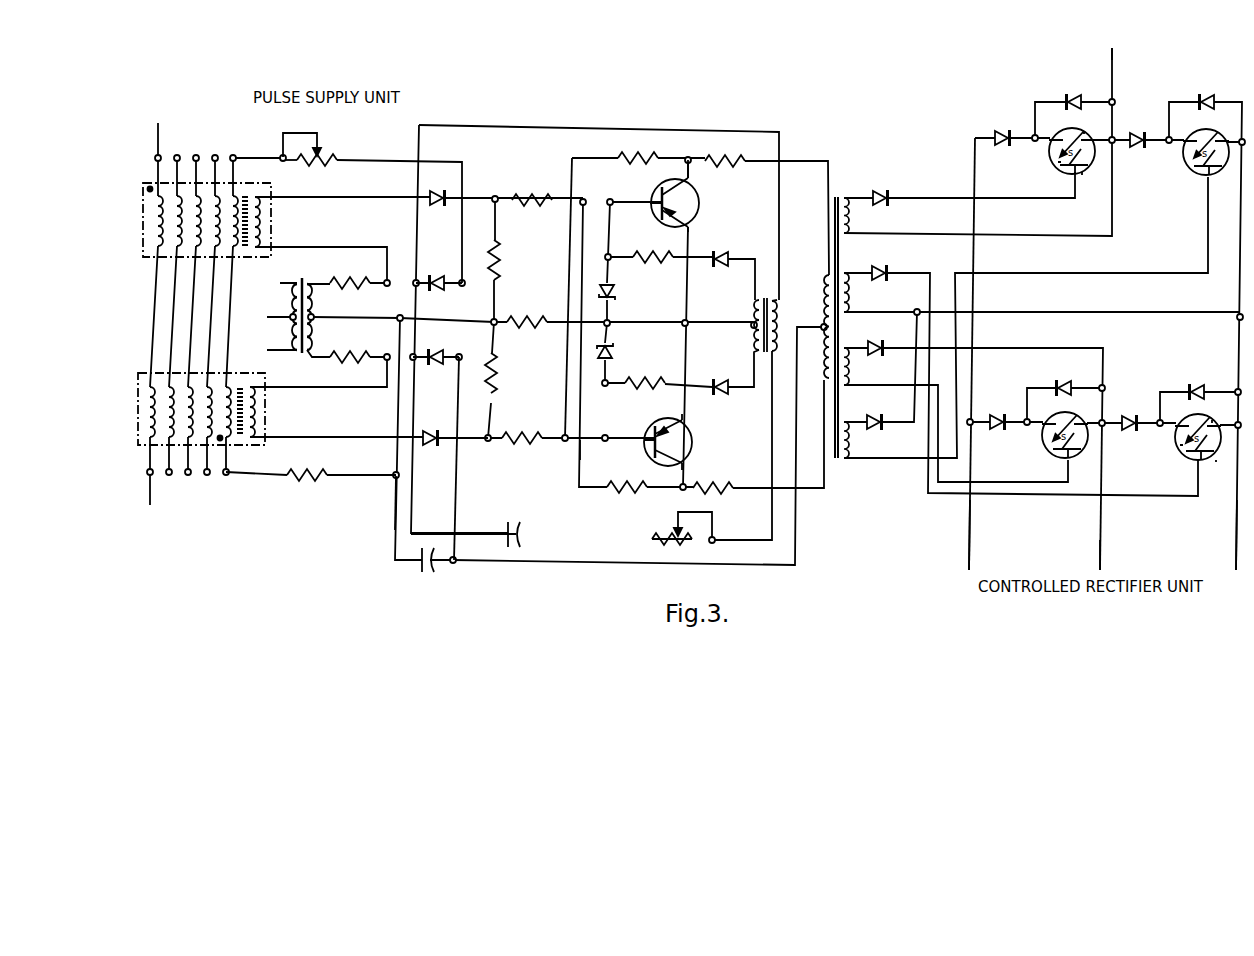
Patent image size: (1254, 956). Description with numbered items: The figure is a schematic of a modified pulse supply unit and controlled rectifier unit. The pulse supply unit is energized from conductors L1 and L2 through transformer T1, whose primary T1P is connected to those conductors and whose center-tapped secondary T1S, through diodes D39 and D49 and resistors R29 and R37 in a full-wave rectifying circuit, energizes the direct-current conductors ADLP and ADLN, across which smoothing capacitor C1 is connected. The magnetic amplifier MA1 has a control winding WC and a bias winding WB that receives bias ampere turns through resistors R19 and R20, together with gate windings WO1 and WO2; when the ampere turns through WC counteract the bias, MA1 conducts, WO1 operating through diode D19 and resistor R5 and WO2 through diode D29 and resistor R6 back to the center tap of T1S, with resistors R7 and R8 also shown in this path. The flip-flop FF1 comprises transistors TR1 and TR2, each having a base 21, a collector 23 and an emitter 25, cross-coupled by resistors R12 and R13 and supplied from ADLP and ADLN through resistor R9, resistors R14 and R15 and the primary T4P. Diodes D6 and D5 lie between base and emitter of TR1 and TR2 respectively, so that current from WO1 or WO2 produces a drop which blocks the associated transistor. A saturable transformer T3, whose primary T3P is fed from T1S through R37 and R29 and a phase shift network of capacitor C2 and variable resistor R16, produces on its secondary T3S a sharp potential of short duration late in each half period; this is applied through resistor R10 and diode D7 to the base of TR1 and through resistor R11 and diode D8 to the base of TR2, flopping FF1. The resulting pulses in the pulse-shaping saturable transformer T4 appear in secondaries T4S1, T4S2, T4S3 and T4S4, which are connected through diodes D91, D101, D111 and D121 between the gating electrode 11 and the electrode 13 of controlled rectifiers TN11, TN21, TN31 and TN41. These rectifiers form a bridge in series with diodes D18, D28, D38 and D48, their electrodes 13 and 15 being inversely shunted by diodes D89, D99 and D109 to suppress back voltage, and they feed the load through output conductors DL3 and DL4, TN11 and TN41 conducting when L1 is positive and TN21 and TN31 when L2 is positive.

The magnetic amplifier MA1 is at (212, 145).
The control winding WC is at (147, 190).
The bias winding WB is at (243, 192).
The gate winding WO1 is at (265, 216).
The gate winding WO2 is at (258, 410).
The resistor R19 is at (321, 168).
The diode D19 is at (448, 183).
The diode D39 is at (440, 290).
The diode D49 is at (441, 350).
The diode D29 is at (445, 421).
The resistor R7 is at (530, 194).
The resistor R5 is at (500, 262).
The resistor R9 is at (530, 314).
The resistor R6 is at (498, 367).
The resistor R8 is at (532, 433).
The resistor R37 is at (368, 276).
The resistor R29 is at (333, 350).
The resistor R20 is at (302, 470).
The transformer T1 is at (311, 271).
The primary T1P is at (292, 333).
The secondary T1S is at (314, 300).
The conductor L2 is at (280, 283).
The conductor L1 is at (267, 350).
The direct current conductor ADLP is at (395, 503).
The direct current conductor ADLN is at (458, 502).
The smoothing capacitor C1 is at (432, 571).
The capacitor C2 is at (516, 526).
The variable resistor R16 is at (676, 532).
The resistor R13 is at (608, 495).
The resistor R15 is at (720, 495).
The resistor R12 is at (644, 153).
The resistor R14 is at (732, 153).
The resistor R10 is at (650, 264).
The resistor R11 is at (656, 378).
The diode D6 is at (616, 292).
The diode D5 is at (614, 352).
The diode D7 is at (716, 251).
The diode D8 is at (726, 380).
The transistor TR1 is at (699, 203).
The transistor TR2 is at (693, 457).
The emitter 25 is at (664, 188).
The base 21 is at (660, 214).
The collector 23 is at (680, 224).
The flip-flop FF1 is at (753, 437).
The saturable transformer T3 is at (770, 256).
The secondary T3S is at (751, 306).
The primary T3P is at (779, 308).
The pulse-shaping saturable transformer T4 is at (856, 185).
The primary T4P is at (824, 283).
The secondary T4S1 is at (849, 218).
The secondary T4S2 is at (849, 295).
The secondary T4S3 is at (849, 368).
The secondary T4S4 is at (849, 448).
The diode D91 is at (870, 192).
The diode D101 is at (884, 268).
The diode D111 is at (883, 341).
The diode D121 is at (880, 415).
The diode D18 is at (1009, 131).
The diode D28 is at (1148, 134).
The diode D89 is at (1210, 96).
The diode D38 is at (1009, 418).
The diode D48 is at (1140, 418).
The diode D99 is at (1061, 383).
The diode D109 is at (1193, 386).
The controlled rectifier TN11 is at (1056, 186).
The controlled rectifier TN21 is at (1190, 186).
The controlled rectifier TN31 is at (1054, 471).
The controlled rectifier TN41 is at (1188, 472).
The output electrode 13 is at (1084, 132).
The output electrode 15 is at (1058, 162).
The gating electrode 11 is at (1082, 176).
The output conductor DL4 is at (969, 522).
The output conductor DL3 is at (1234, 523).